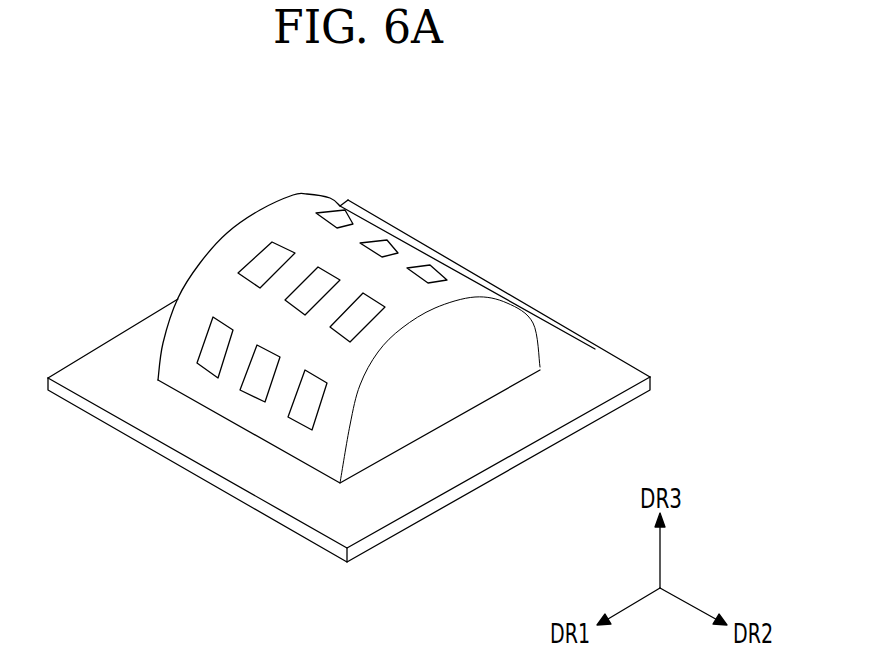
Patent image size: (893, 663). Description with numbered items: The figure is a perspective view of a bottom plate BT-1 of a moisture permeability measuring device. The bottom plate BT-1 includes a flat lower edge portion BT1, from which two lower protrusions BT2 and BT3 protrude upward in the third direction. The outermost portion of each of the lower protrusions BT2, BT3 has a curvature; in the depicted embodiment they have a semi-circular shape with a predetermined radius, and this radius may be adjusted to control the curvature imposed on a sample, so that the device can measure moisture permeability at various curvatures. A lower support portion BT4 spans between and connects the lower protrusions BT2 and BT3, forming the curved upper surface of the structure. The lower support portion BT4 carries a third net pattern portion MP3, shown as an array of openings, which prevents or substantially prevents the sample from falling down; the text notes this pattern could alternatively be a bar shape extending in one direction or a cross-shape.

The bottom plate BT-1 is at (560, 160).
The lower edge portion BT1 is at (602, 365).
The lower protrusion BT2 is at (507, 323).
The lower protrusion BT3 is at (250, 213).
The lower support portion BT4 is at (290, 210).
The third net pattern portion MP3 is at (257, 267).